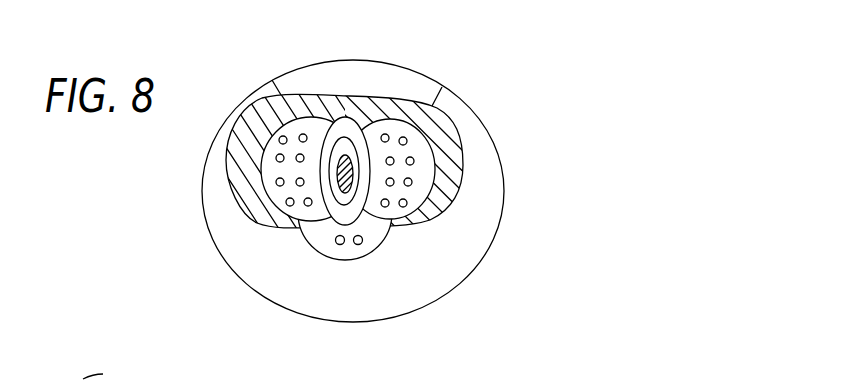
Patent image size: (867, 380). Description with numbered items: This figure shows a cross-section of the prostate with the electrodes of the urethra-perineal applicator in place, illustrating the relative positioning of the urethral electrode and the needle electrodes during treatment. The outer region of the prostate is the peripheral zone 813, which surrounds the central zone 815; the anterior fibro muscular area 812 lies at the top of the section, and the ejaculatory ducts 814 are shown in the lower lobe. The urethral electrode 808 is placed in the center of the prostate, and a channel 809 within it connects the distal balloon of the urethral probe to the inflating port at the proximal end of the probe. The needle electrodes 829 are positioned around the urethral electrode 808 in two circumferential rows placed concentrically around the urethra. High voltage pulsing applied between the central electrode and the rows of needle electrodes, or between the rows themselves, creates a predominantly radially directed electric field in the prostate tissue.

The urethral electrode 808 is at (345, 150).
The channel 809 is at (352, 176).
The anterior fibro muscular area 812 is at (400, 80).
The peripheral zone of the prostate 813 is at (417, 300).
The ejaculatory ducts 814 is at (328, 250).
The central zone of the prostate 815 is at (375, 243).
The needle electrodes 829 is at (280, 137).